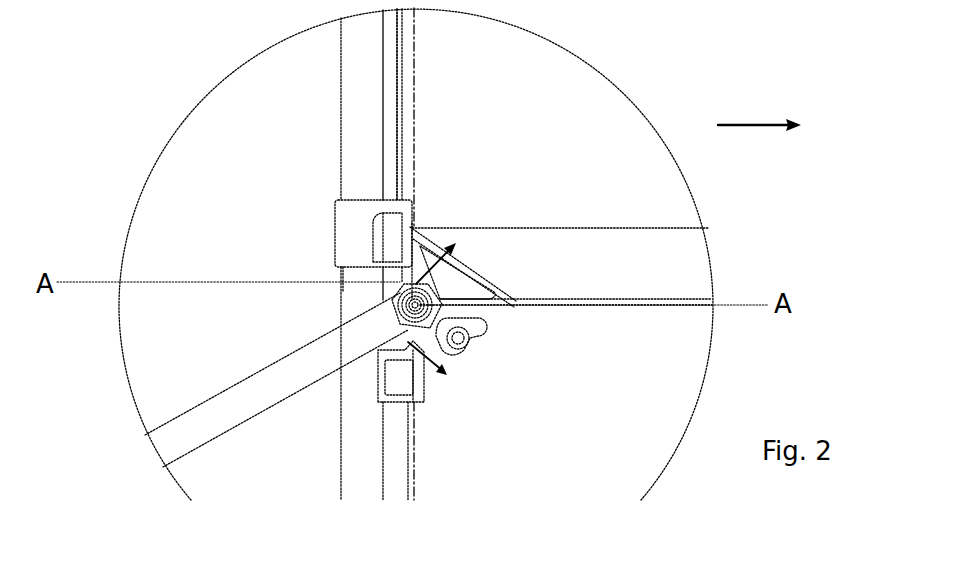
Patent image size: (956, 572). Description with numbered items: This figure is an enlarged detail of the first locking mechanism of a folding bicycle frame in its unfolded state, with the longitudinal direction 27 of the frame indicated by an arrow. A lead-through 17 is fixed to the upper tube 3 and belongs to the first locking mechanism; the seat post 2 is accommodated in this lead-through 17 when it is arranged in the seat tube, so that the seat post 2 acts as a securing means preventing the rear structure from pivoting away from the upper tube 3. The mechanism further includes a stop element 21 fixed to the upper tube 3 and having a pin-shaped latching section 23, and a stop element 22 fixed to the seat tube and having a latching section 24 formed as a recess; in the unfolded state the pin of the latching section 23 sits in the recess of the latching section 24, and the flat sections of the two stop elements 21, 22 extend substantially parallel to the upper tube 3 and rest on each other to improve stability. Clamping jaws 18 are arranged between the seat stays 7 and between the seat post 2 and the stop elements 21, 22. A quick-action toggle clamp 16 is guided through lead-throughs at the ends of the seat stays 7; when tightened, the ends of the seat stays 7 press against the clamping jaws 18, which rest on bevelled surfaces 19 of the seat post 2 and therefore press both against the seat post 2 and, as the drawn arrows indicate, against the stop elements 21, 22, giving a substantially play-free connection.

The seat post 2 is at (361, 90).
The upper tube 3 is at (673, 245).
The seat stays 7 is at (227, 398).
The quick-action toggle clamp 16 is at (412, 304).
The lead-through 17 is at (361, 231).
The clamping jaws 18 is at (392, 285).
The bevelled surfaces 19 is at (389, 135).
The stop element 21 is at (452, 280).
The stop element 22 is at (430, 353).
The latching section 23 is at (462, 341).
The latching section 24 is at (468, 322).
The longitudinal direction 27 is at (750, 122).